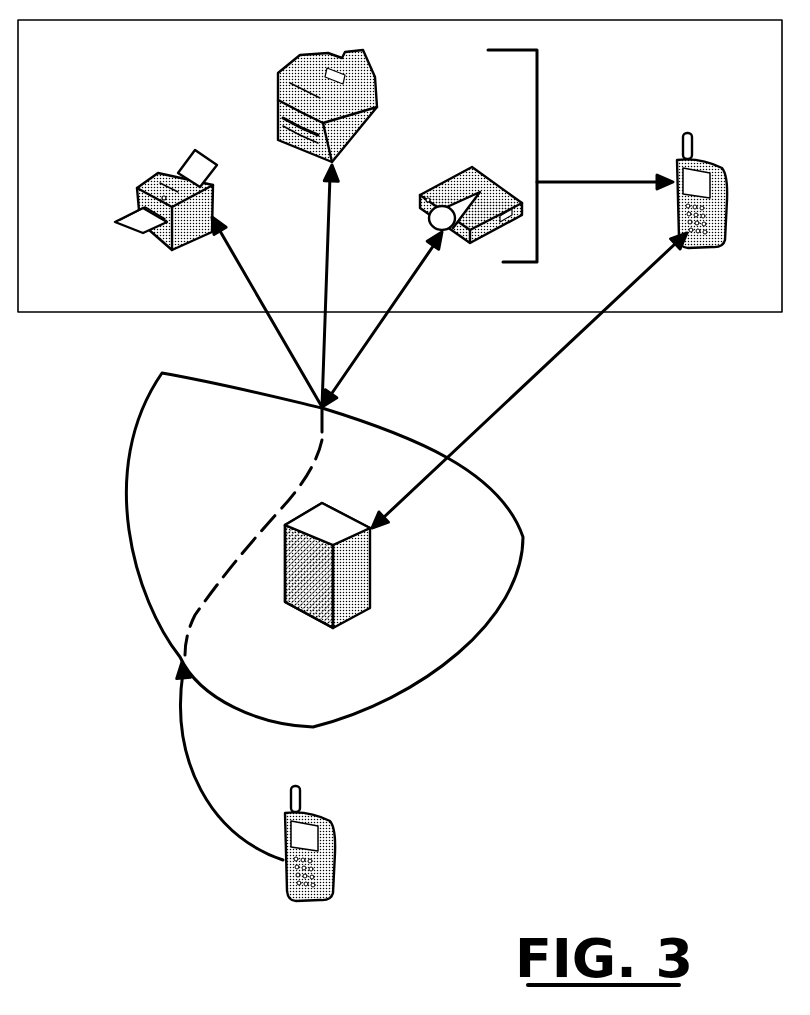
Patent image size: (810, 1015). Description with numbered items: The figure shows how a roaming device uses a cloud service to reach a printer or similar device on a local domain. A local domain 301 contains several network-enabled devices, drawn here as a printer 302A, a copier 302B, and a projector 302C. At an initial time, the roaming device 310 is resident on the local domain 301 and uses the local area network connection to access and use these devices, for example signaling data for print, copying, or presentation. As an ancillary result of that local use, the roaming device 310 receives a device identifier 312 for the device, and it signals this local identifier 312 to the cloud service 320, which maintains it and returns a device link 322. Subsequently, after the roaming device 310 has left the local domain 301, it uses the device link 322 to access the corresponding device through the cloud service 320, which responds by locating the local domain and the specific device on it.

The local domain 301 is at (93, 54).
The printer 302A is at (145, 180).
The copier 302B is at (299, 93).
The projector 302C is at (468, 164).
The roaming device 310 is at (772, 307).
The device identifier 312 is at (529, 315).
The cloud service 320 is at (324, 550).
The device link 322 is at (396, 530).